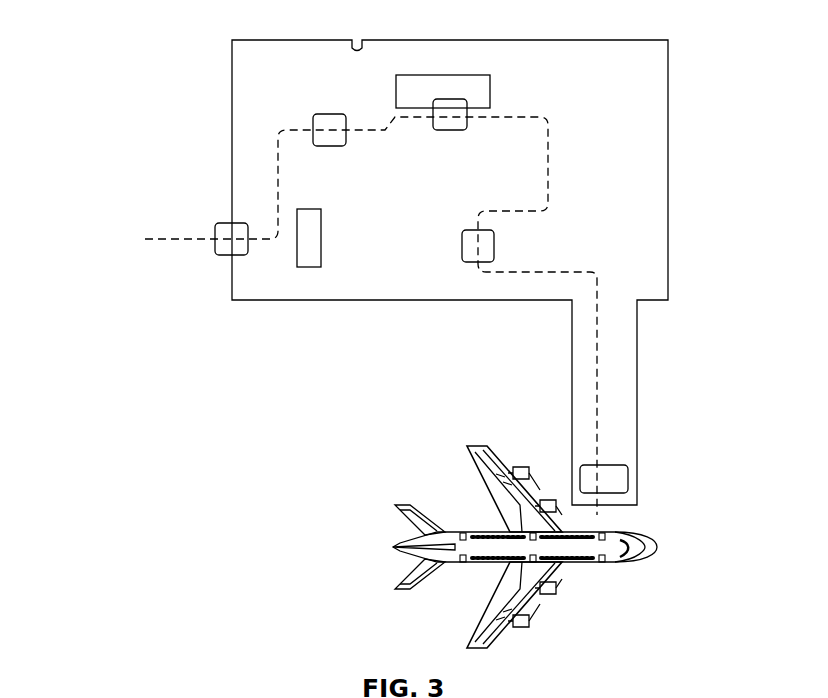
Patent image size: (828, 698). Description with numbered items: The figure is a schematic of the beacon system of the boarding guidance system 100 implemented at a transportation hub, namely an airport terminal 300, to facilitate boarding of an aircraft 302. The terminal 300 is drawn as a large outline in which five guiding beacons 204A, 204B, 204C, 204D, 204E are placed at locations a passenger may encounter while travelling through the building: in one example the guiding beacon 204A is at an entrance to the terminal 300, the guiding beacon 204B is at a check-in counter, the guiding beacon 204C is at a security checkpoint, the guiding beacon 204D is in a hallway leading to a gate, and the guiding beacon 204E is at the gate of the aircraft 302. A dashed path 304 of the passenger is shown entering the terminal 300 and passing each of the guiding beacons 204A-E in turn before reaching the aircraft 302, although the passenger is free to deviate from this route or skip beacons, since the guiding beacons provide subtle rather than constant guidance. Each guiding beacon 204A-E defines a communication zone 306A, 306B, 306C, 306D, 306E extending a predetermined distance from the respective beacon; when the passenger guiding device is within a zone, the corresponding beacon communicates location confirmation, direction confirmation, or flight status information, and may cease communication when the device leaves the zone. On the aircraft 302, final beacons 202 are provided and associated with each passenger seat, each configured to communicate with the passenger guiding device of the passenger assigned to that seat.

The boarding guidance system 100 is at (120, 58).
The airport terminal 300 is at (668, 99).
The aircraft 302 is at (655, 556).
The path 304 is at (548, 156).
The final beacon 202 is at (483, 565).
The guiding beacon 204A is at (226, 256).
The guiding beacon 204B is at (330, 147).
The guiding beacon 204C is at (455, 131).
The guiding beacon 204D is at (462, 246).
The guiding beacon 204E is at (628, 478).
The communication zone 306A is at (230, 222).
The communication zone 306B is at (330, 114).
The communication zone 306C is at (443, 131).
The communication zone 306D is at (494, 246).
The communication zone 306E is at (617, 465).